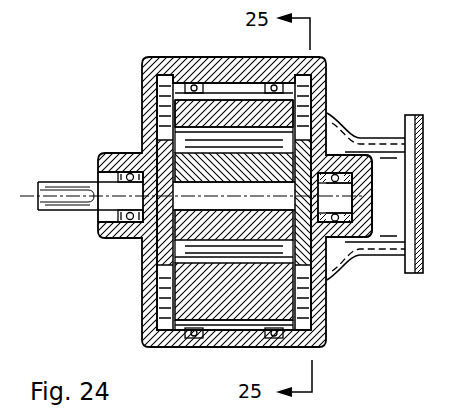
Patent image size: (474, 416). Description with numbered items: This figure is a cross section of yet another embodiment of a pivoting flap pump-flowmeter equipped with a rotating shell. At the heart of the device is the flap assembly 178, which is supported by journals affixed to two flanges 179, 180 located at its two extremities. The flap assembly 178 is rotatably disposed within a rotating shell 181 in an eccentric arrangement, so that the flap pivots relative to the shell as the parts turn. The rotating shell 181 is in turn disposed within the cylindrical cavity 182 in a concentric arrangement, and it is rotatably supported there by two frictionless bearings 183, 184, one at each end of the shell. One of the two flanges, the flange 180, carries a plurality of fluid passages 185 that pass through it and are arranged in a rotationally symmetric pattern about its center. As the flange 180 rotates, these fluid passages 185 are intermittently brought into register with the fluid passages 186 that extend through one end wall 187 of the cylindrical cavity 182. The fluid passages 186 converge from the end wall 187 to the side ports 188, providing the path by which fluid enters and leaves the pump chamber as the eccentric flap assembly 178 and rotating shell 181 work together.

The flap assembly 178 is at (203, 287).
The flange 179 is at (160, 278).
The flange 180 is at (333, 266).
The rotating shell 181 is at (233, 322).
The cylindrical cavity 182 is at (175, 118).
The frictionless bearing 183 is at (193, 117).
The frictionless bearing 184 is at (260, 84).
The fluid passage 185 is at (333, 115).
The fluid passage 186 is at (318, 290).
The end wall 187 is at (322, 313).
The side port 188 is at (423, 170).